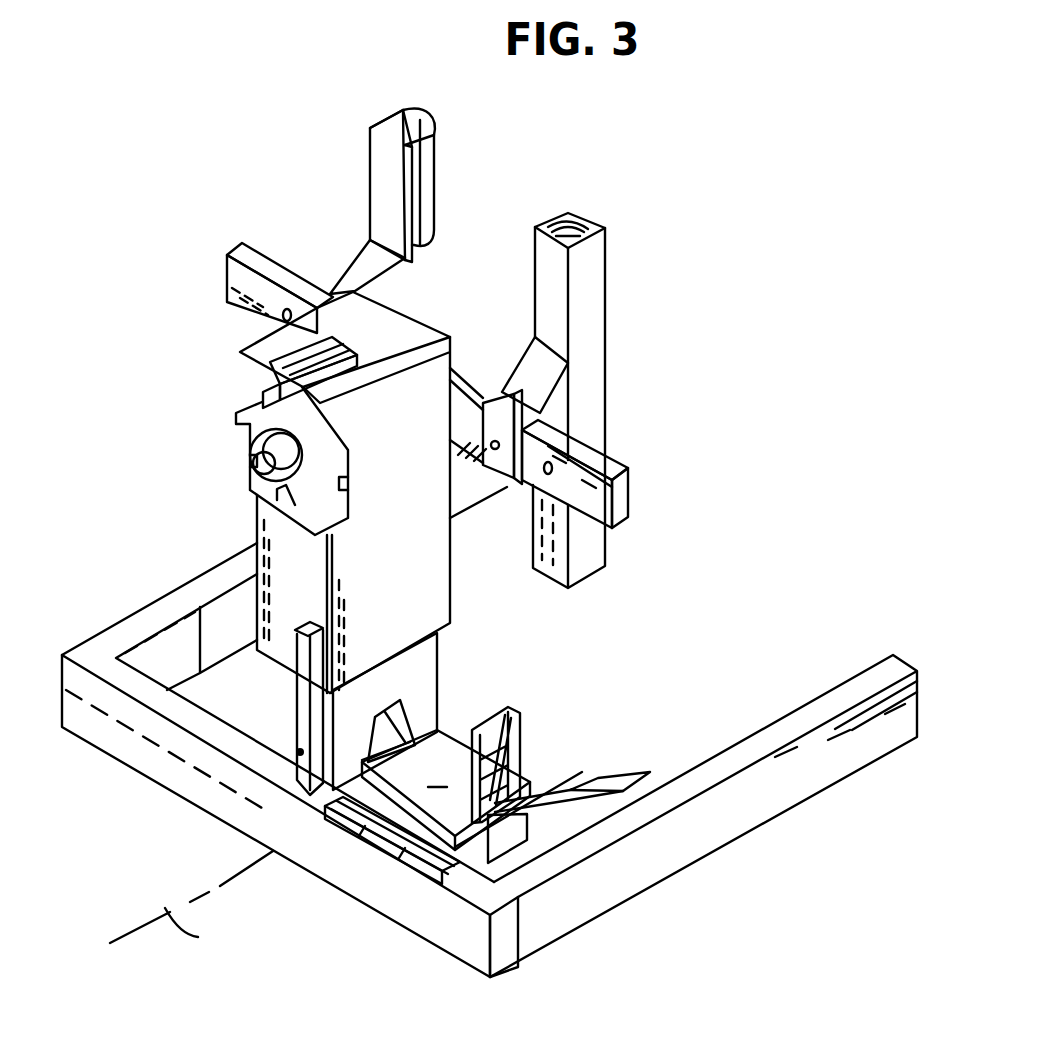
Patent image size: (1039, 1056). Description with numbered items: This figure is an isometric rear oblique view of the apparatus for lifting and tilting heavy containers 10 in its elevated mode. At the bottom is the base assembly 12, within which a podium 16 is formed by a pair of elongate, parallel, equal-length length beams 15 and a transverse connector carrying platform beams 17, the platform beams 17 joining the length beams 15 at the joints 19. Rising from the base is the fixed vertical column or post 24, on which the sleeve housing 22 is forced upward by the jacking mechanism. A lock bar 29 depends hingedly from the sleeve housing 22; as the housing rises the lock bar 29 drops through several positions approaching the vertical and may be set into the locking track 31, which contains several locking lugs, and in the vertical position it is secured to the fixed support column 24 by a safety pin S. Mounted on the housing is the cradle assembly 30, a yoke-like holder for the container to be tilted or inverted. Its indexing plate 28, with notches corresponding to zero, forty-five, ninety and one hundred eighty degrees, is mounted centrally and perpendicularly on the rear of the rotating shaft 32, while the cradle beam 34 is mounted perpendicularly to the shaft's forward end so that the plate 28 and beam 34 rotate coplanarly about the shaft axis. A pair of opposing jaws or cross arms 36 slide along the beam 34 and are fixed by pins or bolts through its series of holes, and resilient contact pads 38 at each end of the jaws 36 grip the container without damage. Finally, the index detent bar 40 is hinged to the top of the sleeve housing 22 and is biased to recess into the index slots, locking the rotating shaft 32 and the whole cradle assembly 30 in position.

The apparatus for lifting and tilting heavy containers 10 is at (250, 150).
The base assembly 12 is at (663, 917).
The length beams 15 is at (469, 497).
The podium 16 is at (547, 776).
The platform beams 17 is at (236, 612).
The joints 19 is at (100, 648).
The sleeve housing 22 is at (432, 596).
The vertical column or post 24 is at (418, 678).
The indexing plate 28 is at (338, 450).
The lock bar 29 is at (306, 786).
The cradle assembly 30 is at (648, 284).
The locking track 31 is at (345, 820).
The rotating shaft 32 is at (262, 468).
The cradle beam 34 is at (621, 478).
The jaws or cross arms 36 is at (382, 168).
The contact pads 38 is at (431, 167).
The index (detent) bar 40 is at (243, 407).
The safety pin S is at (298, 746).